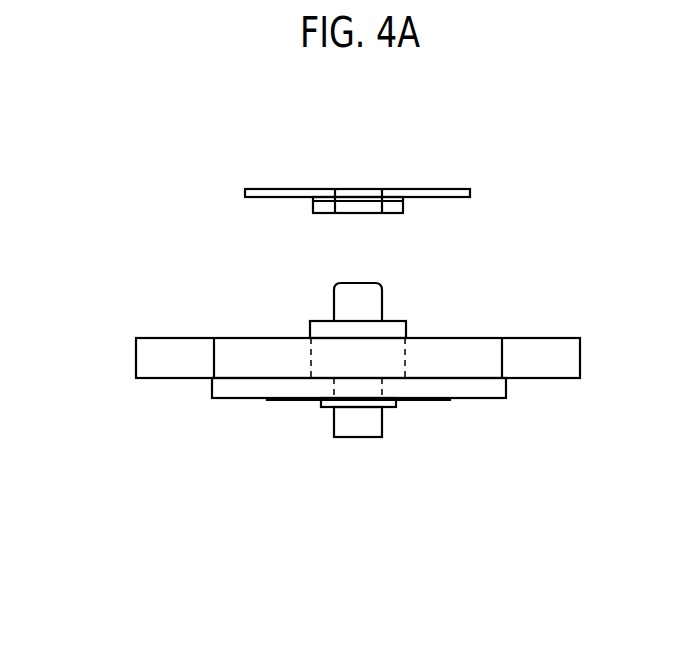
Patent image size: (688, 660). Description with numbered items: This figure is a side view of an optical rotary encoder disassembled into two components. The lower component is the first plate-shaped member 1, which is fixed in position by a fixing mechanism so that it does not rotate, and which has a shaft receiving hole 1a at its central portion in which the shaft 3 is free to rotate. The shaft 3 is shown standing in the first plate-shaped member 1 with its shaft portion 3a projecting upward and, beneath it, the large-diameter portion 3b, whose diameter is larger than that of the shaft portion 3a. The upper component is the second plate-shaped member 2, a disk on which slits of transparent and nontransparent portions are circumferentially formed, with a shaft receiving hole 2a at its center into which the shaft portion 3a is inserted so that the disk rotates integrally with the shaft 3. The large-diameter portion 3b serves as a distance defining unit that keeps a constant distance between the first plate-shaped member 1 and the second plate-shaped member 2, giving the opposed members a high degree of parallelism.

The first plate-shaped member 1 is at (542, 350).
The shaft receiving hole 1a is at (407, 365).
The second plate-shaped member 2 is at (454, 190).
The shaft receiving hole 2a is at (338, 208).
The shaft 3 is at (217, 261).
The shaft portion 3a is at (350, 298).
The large-diameter portion 3b is at (323, 328).